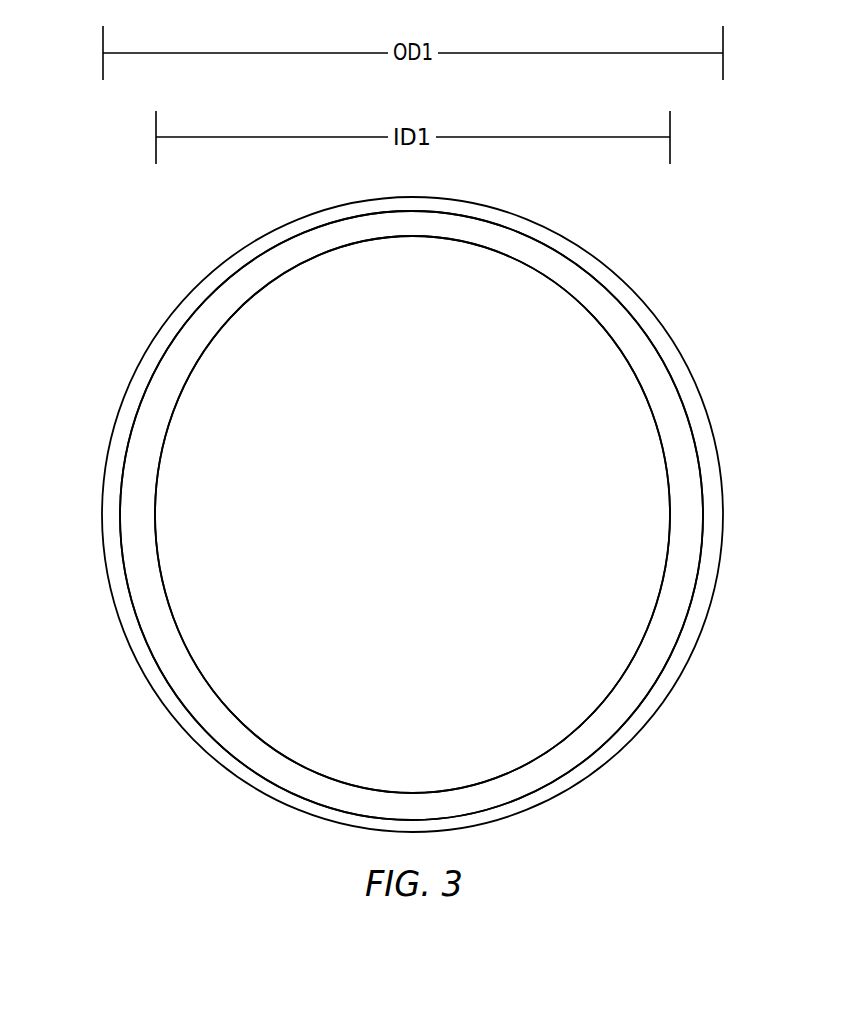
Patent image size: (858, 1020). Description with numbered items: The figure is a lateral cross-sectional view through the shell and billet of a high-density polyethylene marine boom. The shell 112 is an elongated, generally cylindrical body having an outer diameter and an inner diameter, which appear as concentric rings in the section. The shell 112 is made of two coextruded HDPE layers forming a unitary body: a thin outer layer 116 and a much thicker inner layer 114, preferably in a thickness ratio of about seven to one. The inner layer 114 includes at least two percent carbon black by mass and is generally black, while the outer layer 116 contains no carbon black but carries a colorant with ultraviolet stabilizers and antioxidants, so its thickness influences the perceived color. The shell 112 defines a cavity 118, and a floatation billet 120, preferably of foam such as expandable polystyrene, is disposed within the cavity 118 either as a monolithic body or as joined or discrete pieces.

The shell 112 is at (693, 375).
The outer layer 116 is at (707, 445).
The inner layer 114 is at (680, 588).
The cavity 118 is at (566, 737).
The floatation billet 120 is at (430, 524).